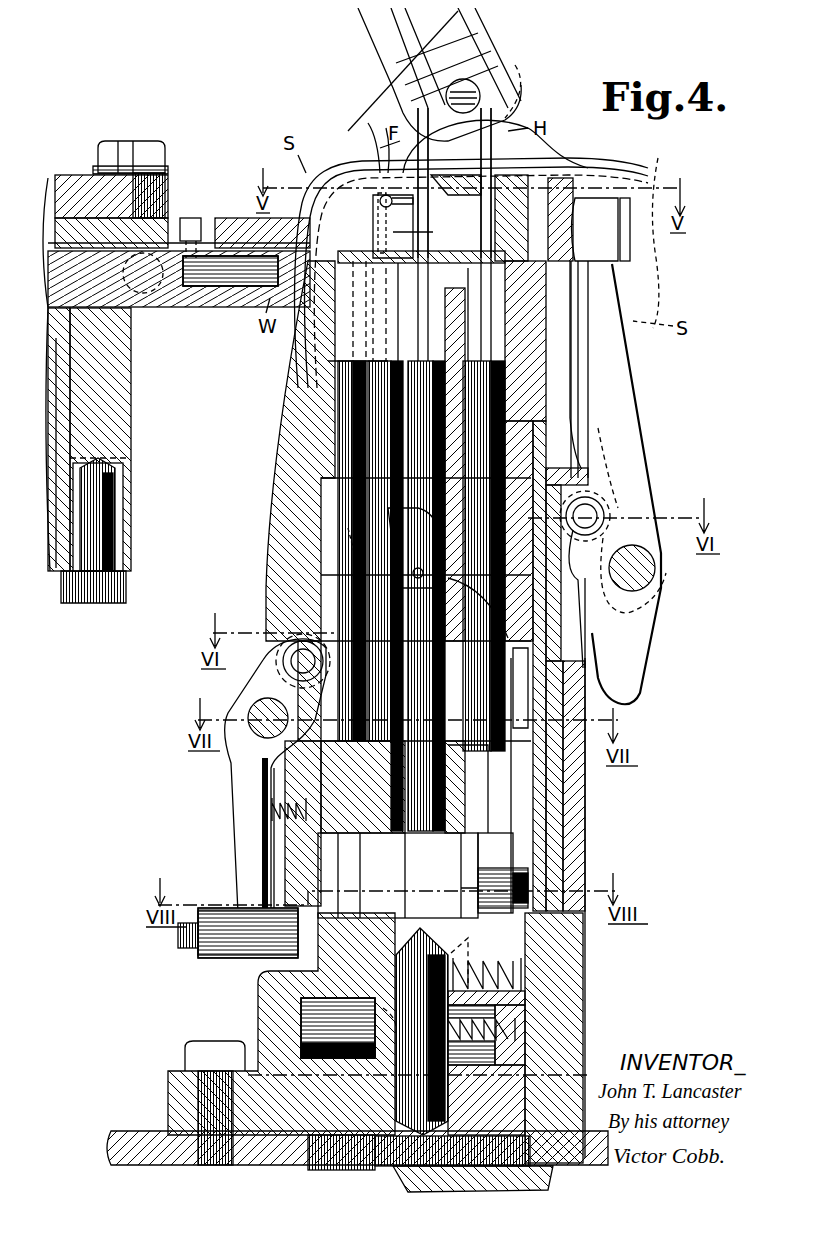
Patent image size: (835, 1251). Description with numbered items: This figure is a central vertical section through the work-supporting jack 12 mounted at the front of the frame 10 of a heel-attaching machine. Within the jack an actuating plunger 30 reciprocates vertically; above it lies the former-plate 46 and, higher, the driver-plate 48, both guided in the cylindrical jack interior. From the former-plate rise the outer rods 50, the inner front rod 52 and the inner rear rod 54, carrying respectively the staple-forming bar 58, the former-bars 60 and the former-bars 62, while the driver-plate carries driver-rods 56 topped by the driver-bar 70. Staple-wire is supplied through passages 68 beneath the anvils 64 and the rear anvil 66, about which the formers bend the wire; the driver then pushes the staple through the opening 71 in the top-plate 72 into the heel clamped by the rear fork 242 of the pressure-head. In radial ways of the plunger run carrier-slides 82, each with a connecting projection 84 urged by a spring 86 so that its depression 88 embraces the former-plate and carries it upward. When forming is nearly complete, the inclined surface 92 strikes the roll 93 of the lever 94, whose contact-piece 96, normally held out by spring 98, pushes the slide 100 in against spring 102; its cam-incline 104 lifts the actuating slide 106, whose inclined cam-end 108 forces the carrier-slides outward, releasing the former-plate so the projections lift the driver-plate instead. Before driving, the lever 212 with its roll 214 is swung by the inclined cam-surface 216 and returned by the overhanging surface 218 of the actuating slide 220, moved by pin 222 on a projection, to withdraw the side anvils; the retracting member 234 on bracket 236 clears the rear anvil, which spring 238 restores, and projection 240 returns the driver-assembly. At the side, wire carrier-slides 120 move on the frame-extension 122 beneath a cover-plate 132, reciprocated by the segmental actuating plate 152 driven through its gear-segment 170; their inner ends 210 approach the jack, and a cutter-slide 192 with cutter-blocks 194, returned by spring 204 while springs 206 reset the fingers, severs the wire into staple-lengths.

The frame 10 is at (130, 1130).
The work-supporting jack 12 is at (577, 960).
The actuating plunger 30 is at (515, 1160).
The former-plate 46 is at (262, 795).
The driver-plate 48 is at (550, 597).
The outer rods 50 is at (500, 684).
The inner front rod 52 is at (460, 698).
The inner rear rod 54 is at (410, 679).
The driver-rods 56 is at (340, 495).
The staple-forming bar 58 is at (360, 305).
The former-bars 60 is at (498, 329).
The former-bars 62 is at (498, 301).
The anvils 64 is at (575, 262).
The anvil 66 is at (425, 233).
The slots or passages 68 is at (298, 210).
The driver-bar 70 is at (365, 315).
The opening or passage 71 is at (467, 183).
The top-plate 72 is at (562, 168).
The carrier-slides 82 is at (430, 915).
The connecting projection 84 is at (470, 836).
The spring 86 is at (513, 970).
The depression 88 is at (485, 758).
The inclined surface 92 is at (250, 730).
The roll 93 is at (275, 648).
The lever 94 is at (235, 771).
The adjustable contact-piece 96 is at (265, 948).
The spring 98 is at (256, 823).
The slide 100 is at (300, 1010).
The spring 102 is at (507, 1018).
The cam-incline 104 is at (390, 1025).
The actuating slide 106 is at (355, 1122).
The inclined cam-end 108 is at (440, 935).
The carrier-slides 120 is at (190, 300).
The frame-extension 122 is at (112, 394).
The cover-plate 132 is at (155, 180).
The segmental actuating plate 152 is at (50, 345).
The gear-segment 170 is at (60, 429).
The cutter-slide 192 is at (240, 280).
The cutter-blocks 194 is at (195, 212).
The spring 204 is at (140, 285).
The springs 206 is at (80, 162).
The inner ends 210 is at (330, 225).
The lever 212 is at (625, 384).
The roll 214 is at (632, 551).
The inclined cam-surface 216 is at (570, 575).
The overhanging surface 218 is at (590, 485).
The actuating slide 220 is at (553, 820).
The pin 222 is at (565, 900).
The retracting member 234 is at (370, 325).
The bracket 236 is at (345, 530).
The spring 238 is at (422, 225).
The projection 240 is at (519, 684).
The rear fork 242 is at (500, 98).